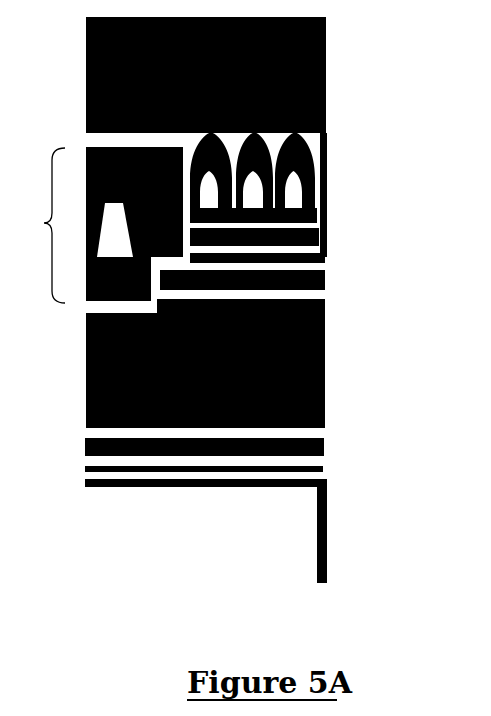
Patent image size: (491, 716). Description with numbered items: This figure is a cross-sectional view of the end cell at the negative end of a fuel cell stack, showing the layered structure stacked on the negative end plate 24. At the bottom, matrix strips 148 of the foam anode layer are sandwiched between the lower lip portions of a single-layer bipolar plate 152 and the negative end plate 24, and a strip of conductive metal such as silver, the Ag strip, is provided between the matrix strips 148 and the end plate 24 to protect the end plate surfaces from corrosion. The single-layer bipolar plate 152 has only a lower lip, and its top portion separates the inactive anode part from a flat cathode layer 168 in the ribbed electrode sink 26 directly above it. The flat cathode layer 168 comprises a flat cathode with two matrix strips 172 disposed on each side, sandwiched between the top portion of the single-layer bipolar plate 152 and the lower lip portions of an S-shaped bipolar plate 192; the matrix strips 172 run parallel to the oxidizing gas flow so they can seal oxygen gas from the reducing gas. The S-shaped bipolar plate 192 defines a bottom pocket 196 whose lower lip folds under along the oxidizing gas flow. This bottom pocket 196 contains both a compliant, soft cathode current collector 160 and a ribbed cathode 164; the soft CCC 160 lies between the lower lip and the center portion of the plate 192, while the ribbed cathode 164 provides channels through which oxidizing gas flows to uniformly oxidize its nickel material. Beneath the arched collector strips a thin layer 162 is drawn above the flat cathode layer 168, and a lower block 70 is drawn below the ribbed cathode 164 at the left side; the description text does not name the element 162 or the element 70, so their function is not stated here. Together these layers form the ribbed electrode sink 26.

The "S"-shaped bipolar plate 192 is at (88, 75).
The ribbed cathode 164 is at (87, 155).
The lower dielectric block 70 is at (86, 293).
The ribbed electrode sink 26 is at (44, 224).
The soft cathode current collector 160 is at (305, 177).
The bottom pocket 196 is at (252, 198).
The resistive layer 162 is at (322, 237).
The flat cathode layer 168 is at (337, 252).
The matrix strips 172 is at (490, 297).
The single-layer bipolar plate 152 is at (86, 380).
The matrix strips 148 is at (490, 403).
The silver strip Ag is at (490, 455).
The negative end plate 24 is at (292, 536).